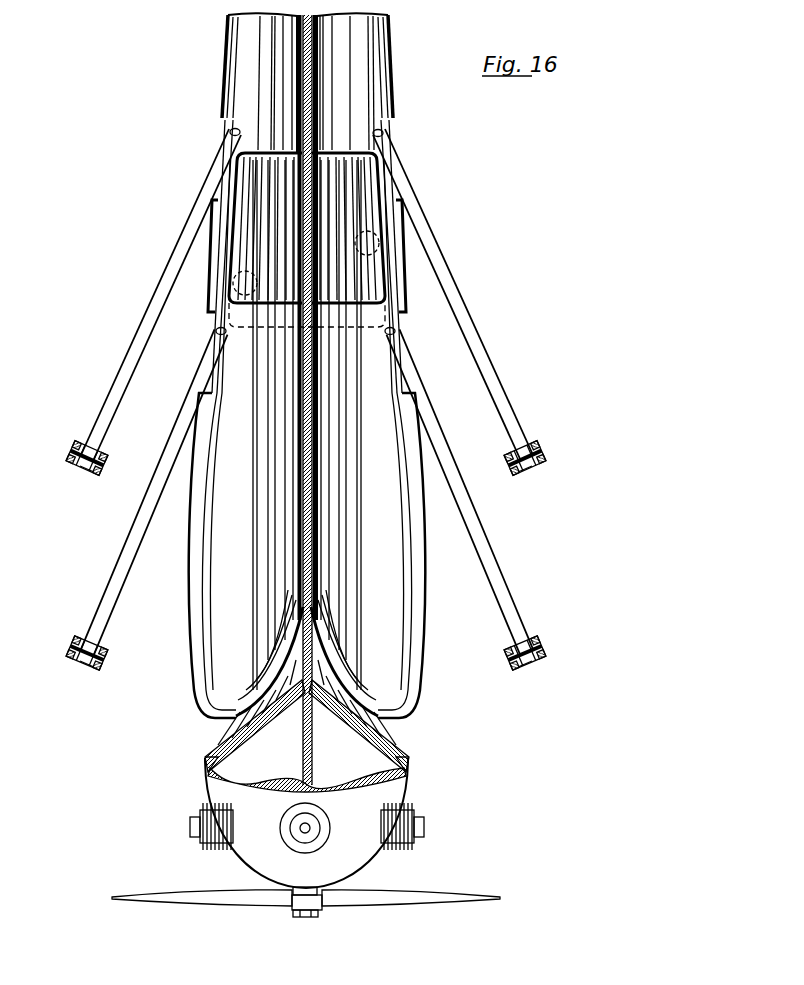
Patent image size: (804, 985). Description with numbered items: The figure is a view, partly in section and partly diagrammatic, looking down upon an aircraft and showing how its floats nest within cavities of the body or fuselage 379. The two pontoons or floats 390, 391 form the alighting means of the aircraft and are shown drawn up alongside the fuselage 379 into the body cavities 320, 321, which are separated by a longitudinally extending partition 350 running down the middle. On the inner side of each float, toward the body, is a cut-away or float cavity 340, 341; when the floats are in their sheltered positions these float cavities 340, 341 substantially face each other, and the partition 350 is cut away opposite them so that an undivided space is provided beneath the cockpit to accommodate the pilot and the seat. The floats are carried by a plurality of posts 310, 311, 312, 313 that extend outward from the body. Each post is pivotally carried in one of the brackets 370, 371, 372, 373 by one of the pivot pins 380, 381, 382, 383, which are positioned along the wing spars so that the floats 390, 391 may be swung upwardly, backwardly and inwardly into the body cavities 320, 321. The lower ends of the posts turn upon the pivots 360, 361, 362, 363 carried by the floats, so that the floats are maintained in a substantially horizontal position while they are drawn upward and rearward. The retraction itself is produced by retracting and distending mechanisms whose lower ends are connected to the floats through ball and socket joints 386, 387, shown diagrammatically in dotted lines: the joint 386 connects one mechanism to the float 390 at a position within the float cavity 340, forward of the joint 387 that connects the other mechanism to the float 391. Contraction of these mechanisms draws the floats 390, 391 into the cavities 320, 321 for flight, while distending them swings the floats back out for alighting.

The post 310 is at (134, 536).
The post 311 is at (487, 560).
The post 312 is at (167, 282).
The post 313 is at (446, 270).
The body cavity 320 is at (240, 740).
The body cavity 321 is at (382, 726).
The float cavity 340 is at (247, 250).
The float cavity 341 is at (368, 286).
The longitudinally extending partition 350 is at (307, 172).
The pivot 360 is at (215, 332).
The pivot 361 is at (397, 332).
The pivot 362 is at (230, 132).
The pivot 363 is at (384, 133).
The bracket 370 is at (90, 670).
The bracket 371 is at (520, 668).
The bracket 372 is at (92, 470).
The bracket 373 is at (520, 470).
The body or fuselage 379 is at (303, 757).
The pivot pin 380 is at (72, 648).
The pivot pin 381 is at (542, 650).
The pivot pin 382 is at (72, 450).
The pivot pin 383 is at (540, 450).
The ball and socket joint 386 is at (245, 285).
The ball and socket joint 387 is at (368, 242).
The float 390 is at (247, 61).
The float 391 is at (365, 68).